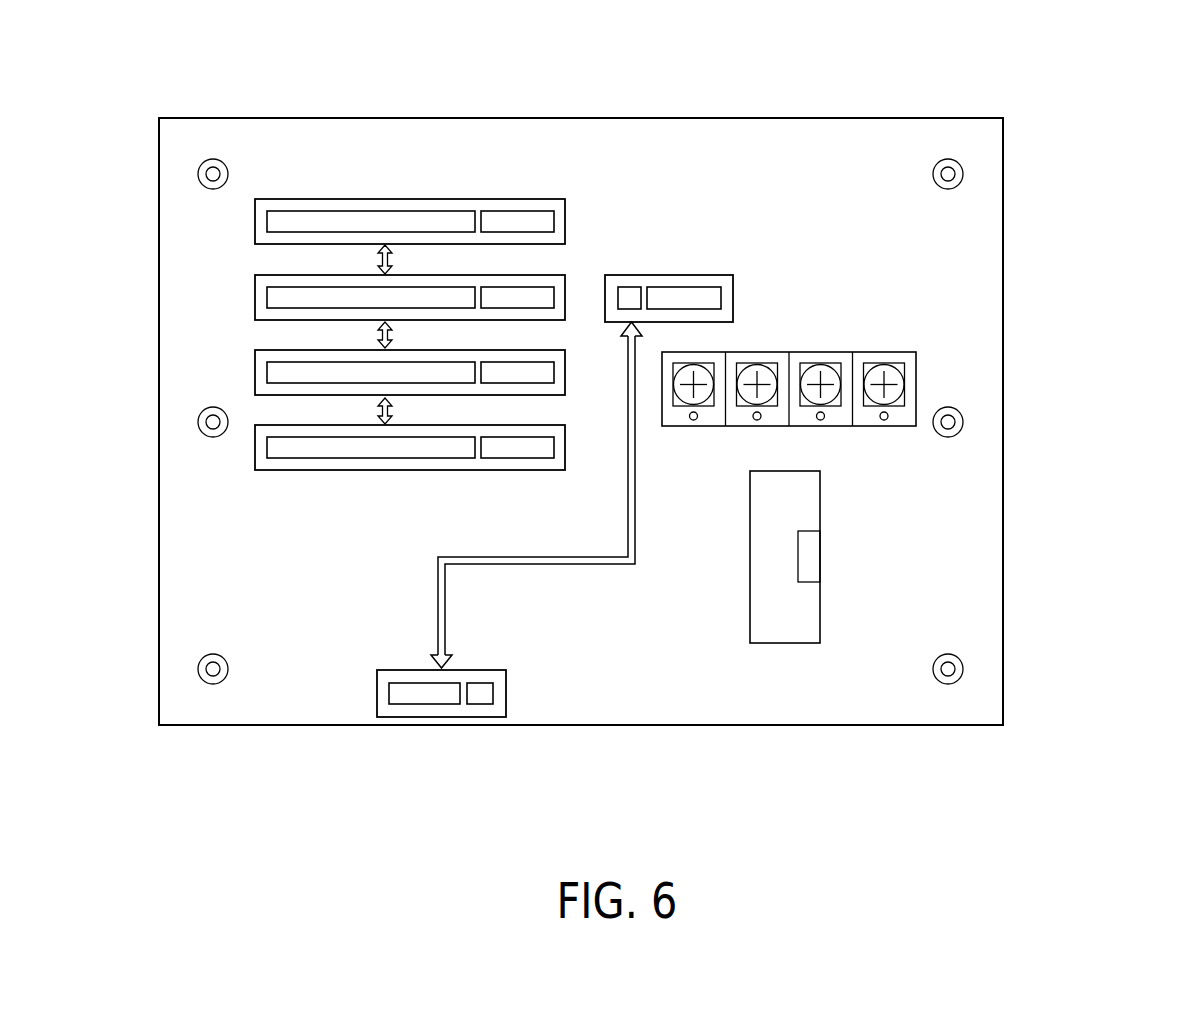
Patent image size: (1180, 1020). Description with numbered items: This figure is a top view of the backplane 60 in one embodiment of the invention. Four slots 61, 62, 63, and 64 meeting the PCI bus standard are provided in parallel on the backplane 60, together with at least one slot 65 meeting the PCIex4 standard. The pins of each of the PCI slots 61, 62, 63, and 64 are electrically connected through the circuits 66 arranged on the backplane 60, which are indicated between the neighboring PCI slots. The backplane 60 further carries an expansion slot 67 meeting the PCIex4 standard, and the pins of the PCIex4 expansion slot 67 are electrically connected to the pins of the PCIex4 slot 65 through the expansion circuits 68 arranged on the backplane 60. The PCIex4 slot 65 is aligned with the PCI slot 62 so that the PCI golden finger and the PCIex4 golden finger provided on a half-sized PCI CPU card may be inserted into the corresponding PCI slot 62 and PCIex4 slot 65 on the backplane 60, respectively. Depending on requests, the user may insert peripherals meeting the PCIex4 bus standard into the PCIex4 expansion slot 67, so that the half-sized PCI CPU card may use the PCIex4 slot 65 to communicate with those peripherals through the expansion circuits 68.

The backplane 60 is at (1052, 128).
The PCI slot 61 is at (260, 226).
The PCI slot 62 is at (325, 297).
The PCI slot 63 is at (325, 373).
The PCI slot 64 is at (325, 449).
The PCIex4 slot 65 is at (708, 279).
The circuits 66 is at (395, 333).
The PCIex4 expansion slot 67 is at (422, 695).
The expansion circuits 68 is at (613, 562).